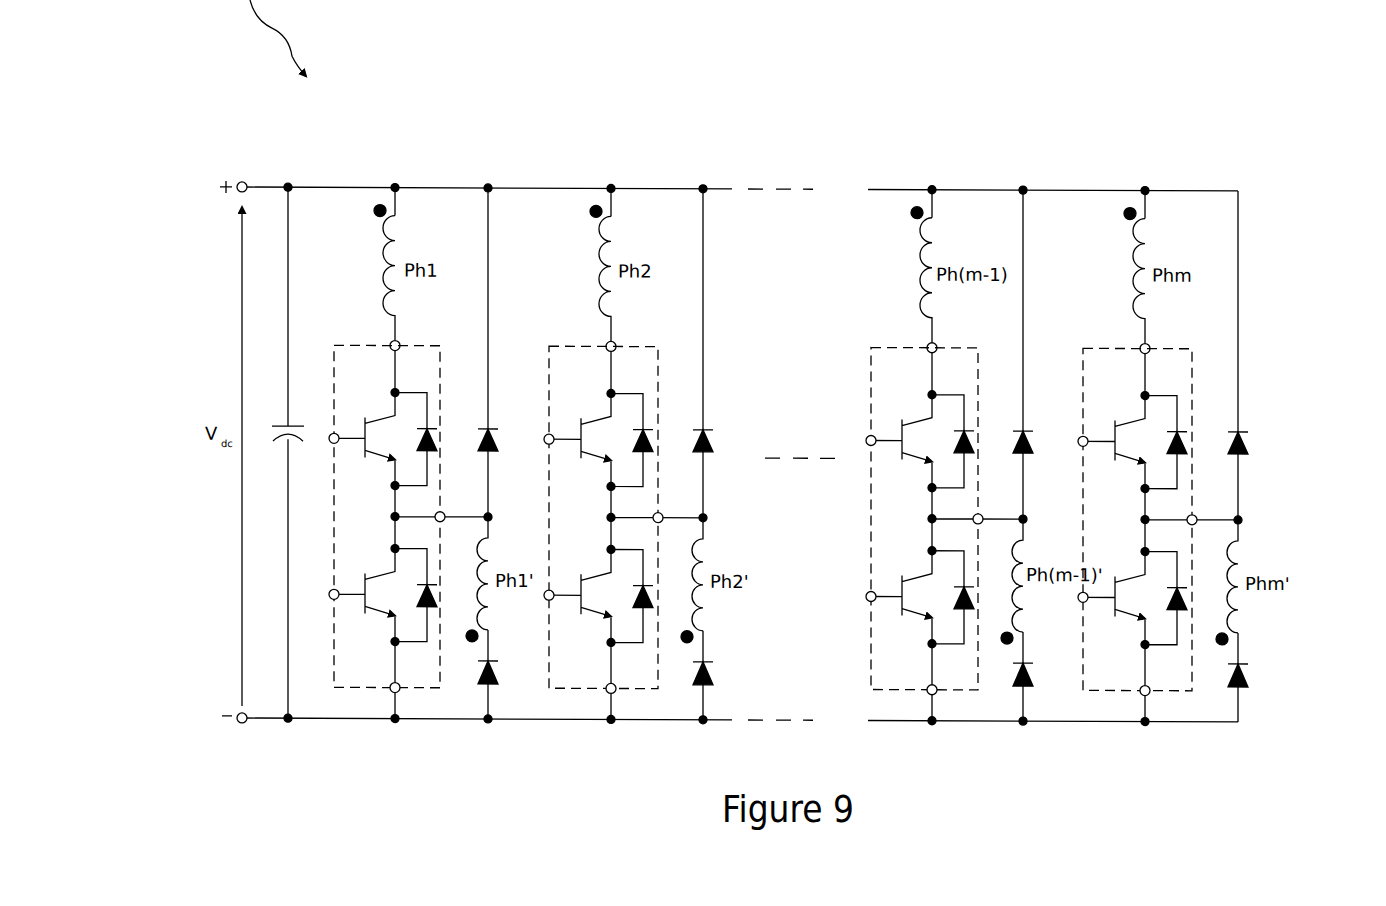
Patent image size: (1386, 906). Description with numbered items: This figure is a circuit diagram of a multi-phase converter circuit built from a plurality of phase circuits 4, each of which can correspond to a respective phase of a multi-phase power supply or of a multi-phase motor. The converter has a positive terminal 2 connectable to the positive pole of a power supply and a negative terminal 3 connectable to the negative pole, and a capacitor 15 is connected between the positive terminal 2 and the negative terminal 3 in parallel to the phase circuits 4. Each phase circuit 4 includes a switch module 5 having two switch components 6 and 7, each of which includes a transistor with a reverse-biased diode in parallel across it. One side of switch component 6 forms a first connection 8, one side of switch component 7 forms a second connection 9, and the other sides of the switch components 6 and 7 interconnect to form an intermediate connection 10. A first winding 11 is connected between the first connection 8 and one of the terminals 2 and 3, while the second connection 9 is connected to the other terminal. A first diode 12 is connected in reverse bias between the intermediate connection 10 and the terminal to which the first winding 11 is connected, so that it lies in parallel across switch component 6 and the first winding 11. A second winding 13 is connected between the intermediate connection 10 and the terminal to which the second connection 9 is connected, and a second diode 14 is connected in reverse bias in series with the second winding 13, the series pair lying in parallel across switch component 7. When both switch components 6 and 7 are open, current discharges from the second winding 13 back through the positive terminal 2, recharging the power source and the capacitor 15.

The positive terminal 2 is at (241, 178).
The negative terminal 3 is at (242, 725).
The phase circuit 4 is at (441, 172).
The switch module 5 is at (353, 343).
The switch component 6 is at (377, 410).
The switch component 7 is at (376, 553).
The first connection 8 is at (400, 342).
The second connection 9 is at (388, 690).
The intermediate connection 10 is at (437, 511).
The first winding 11 is at (388, 254).
The first diode 12 is at (491, 441).
The second winding 13 is at (490, 544).
The second diode 14 is at (493, 676).
The capacitor 15 is at (282, 418).